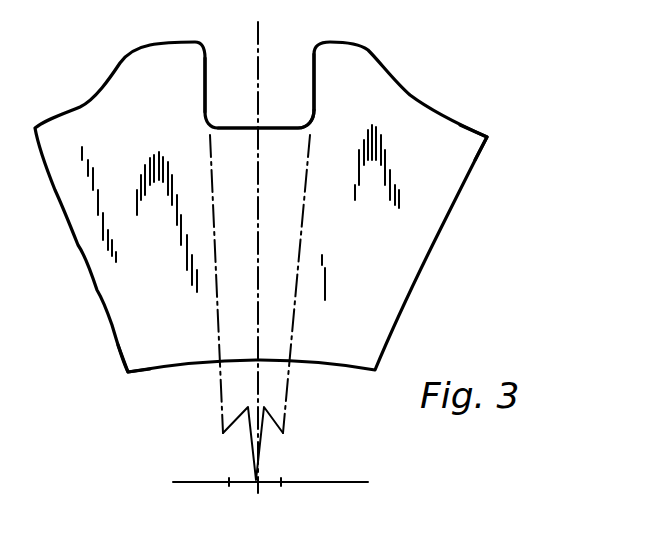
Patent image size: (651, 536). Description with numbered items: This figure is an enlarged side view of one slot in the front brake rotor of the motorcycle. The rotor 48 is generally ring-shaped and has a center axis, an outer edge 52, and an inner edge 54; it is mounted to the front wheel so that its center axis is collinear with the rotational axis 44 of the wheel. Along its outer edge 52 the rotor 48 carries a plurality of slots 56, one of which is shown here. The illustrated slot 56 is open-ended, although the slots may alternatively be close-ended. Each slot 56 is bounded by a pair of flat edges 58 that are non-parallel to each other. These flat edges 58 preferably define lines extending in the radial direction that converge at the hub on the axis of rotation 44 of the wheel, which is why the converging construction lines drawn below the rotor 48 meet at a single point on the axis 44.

The rotational axis 44 is at (262, 480).
The rotor 48 is at (395, 260).
The outer edge 52 is at (480, 137).
The inner edge 54 is at (148, 373).
The slot 56 is at (275, 128).
The flat edges 58 is at (205, 78).